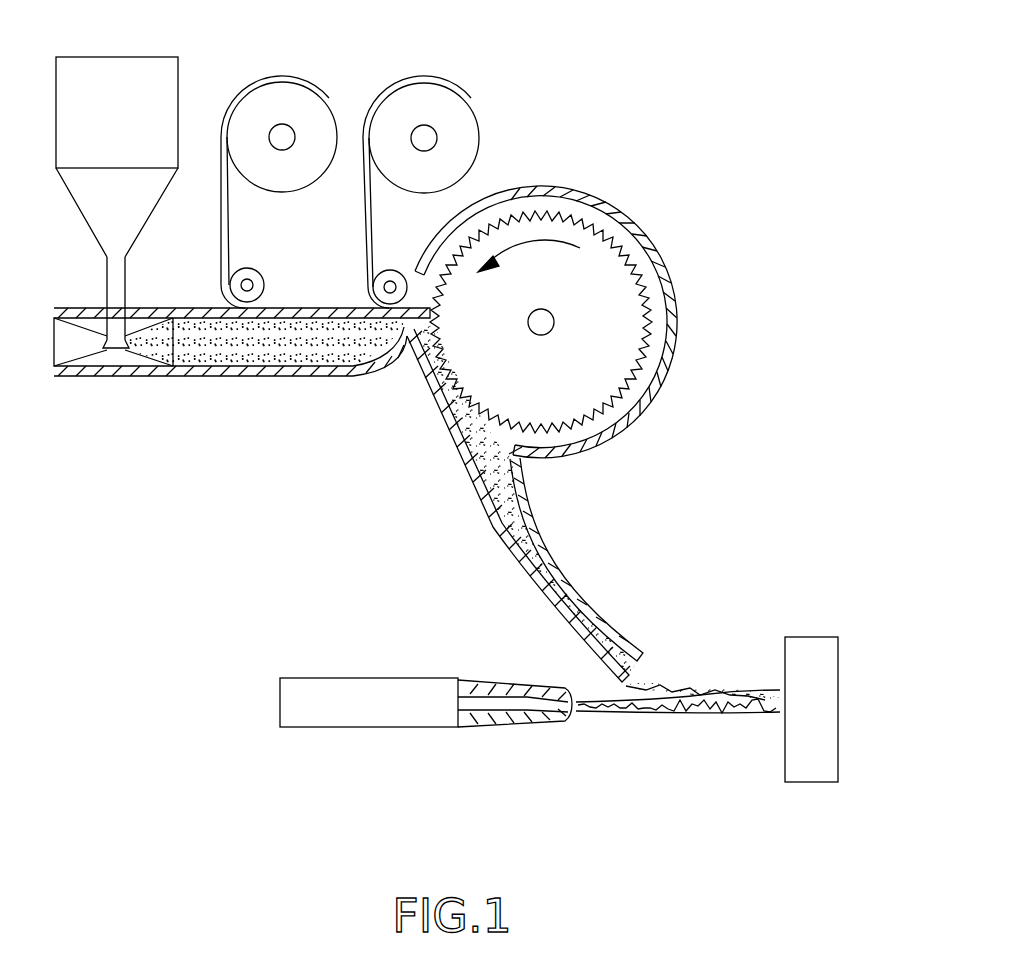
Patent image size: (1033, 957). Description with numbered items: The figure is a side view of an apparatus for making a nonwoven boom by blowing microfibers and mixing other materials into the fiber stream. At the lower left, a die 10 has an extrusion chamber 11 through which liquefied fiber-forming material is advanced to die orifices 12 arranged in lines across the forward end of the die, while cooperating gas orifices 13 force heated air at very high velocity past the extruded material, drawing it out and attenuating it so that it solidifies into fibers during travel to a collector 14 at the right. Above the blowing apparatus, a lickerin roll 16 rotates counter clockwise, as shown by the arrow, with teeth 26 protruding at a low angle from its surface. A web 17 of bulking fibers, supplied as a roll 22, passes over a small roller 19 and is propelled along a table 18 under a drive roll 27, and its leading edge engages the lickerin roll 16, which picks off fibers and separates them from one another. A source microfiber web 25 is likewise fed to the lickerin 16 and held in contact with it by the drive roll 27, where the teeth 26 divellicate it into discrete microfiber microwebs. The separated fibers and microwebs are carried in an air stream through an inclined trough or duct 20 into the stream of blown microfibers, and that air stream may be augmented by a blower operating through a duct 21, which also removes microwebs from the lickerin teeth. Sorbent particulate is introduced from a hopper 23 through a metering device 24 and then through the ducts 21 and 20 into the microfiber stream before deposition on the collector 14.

The die 10 is at (370, 678).
The extrusion chamber 11 is at (487, 703).
The die orifices 12 is at (578, 710).
The gas orifices 13 is at (537, 728).
The collector 14 is at (838, 677).
The lickerin roll 16 is at (600, 359).
The web of bulking fibers 17 is at (230, 215).
The table 18 is at (313, 332).
The guide roller 19 is at (260, 285).
The inclined trough or duct 20 is at (463, 448).
The duct 21 is at (222, 358).
The roll 22 is at (306, 103).
The hopper 23 is at (127, 280).
The metering device 24 is at (90, 347).
The source microfiber web 25 is at (452, 122).
The teeth 26 is at (658, 268).
The drive roll 27 is at (400, 270).